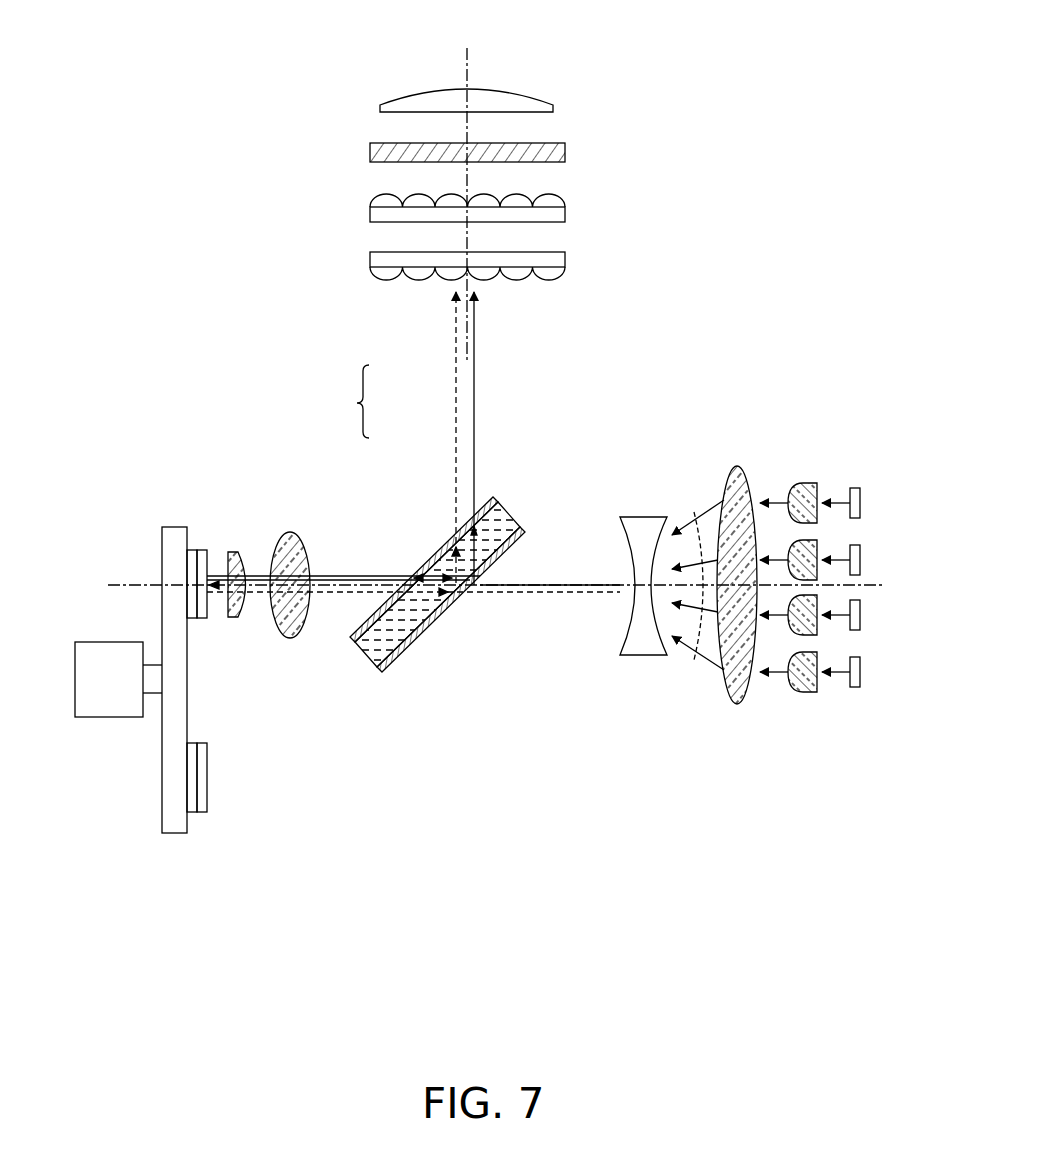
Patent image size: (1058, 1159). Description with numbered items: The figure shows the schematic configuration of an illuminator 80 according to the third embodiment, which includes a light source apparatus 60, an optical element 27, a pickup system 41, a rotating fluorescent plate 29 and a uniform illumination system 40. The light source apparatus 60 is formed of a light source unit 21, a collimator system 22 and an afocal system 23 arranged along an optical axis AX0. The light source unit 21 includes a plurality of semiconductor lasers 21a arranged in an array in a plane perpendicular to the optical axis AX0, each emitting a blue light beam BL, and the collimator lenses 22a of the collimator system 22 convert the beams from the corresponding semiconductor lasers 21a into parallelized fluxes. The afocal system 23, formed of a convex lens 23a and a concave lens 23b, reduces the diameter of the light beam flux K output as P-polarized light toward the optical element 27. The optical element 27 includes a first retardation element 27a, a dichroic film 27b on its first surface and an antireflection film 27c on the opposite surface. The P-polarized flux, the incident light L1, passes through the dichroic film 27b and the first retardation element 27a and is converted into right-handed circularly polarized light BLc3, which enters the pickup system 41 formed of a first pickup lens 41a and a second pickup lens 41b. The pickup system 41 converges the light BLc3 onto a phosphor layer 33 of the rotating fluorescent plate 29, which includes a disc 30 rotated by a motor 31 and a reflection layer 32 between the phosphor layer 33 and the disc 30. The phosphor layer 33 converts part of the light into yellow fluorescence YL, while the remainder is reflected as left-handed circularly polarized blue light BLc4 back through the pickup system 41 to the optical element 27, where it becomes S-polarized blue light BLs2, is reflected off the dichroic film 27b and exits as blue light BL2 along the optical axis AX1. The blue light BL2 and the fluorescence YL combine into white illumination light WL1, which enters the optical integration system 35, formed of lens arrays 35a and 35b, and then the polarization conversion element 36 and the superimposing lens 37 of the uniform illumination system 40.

The illuminator 80 is at (737, 173).
The uniform illumination system 40 is at (692, 78).
The light source apparatus 60 is at (684, 339).
The superimposing lens 37 is at (560, 103).
The polarization conversion element 36 is at (565, 155).
The optical integration system 35 is at (647, 197).
The lens array 35a is at (565, 258).
The lens array 35b is at (565, 214).
The optical element 27 is at (627, 419).
The first retardation element 27a is at (515, 517).
The dichroic film 27b is at (527, 536).
The antireflection film 27c is at (492, 502).
The afocal system 23 is at (768, 396).
The convex lens 23a is at (738, 466).
The concave lens 23b is at (643, 516).
The collimator system 22 is at (810, 581).
The collimator lens 22a is at (806, 693).
The light source unit 21 is at (853, 569).
The semiconductor laser 21a is at (852, 690).
The pickup system 41 is at (222, 691).
The first pickup lens 41a is at (292, 634).
The second pickup lens 41b is at (242, 619).
The rotating fluorescent plate 29 is at (175, 902).
The disc 30 is at (168, 824).
The motor 31 is at (112, 708).
The reflection layer 32 is at (189, 814).
The phosphor layer 33 is at (205, 814).
The optical axis AX0 is at (127, 582).
The optical axis AX1 is at (466, 50).
The white illumination light WL1 is at (340, 401).
The blue light BL2 is at (474, 392).
The yellow fluorescence YL is at (456, 421).
The right-handed circularly polarized light BLc3 is at (335, 575).
The left-handed circularly polarized blue light BLc4 is at (376, 575).
The S-polarized blue light BLs2 is at (432, 571).
The incident light L1 is at (556, 588).
The light beam flux K is at (691, 664).
The blue light beam BL is at (776, 674).